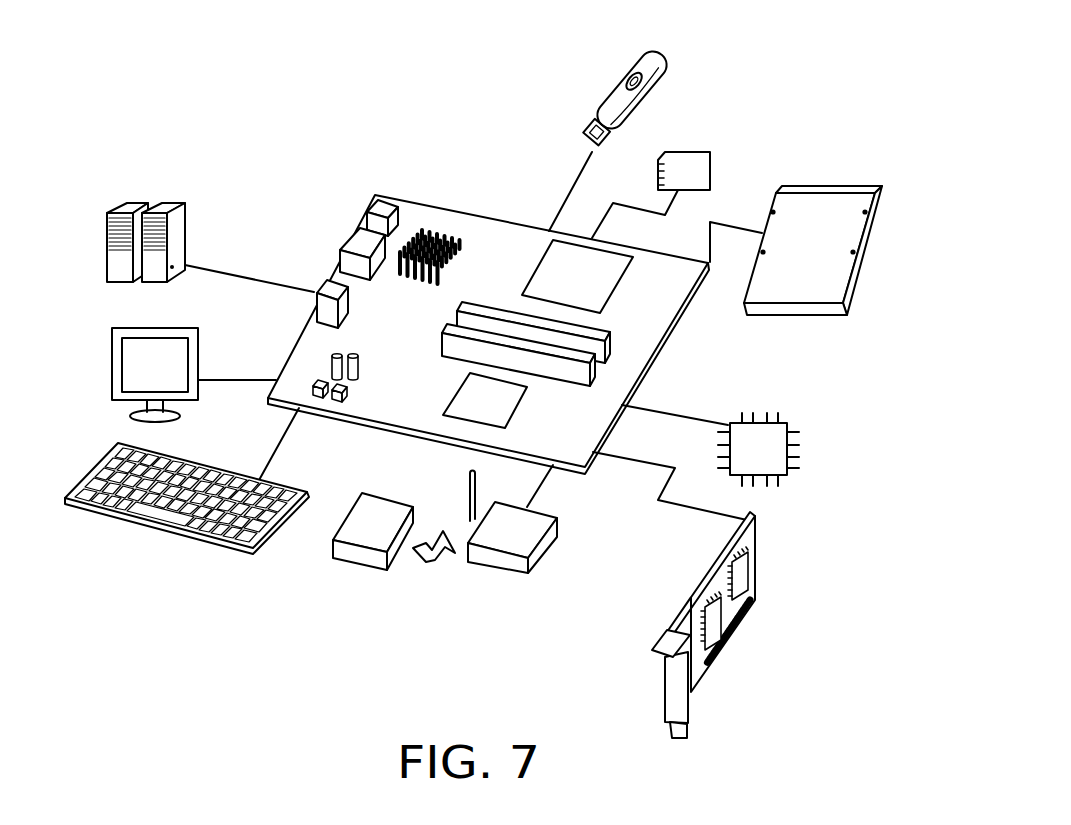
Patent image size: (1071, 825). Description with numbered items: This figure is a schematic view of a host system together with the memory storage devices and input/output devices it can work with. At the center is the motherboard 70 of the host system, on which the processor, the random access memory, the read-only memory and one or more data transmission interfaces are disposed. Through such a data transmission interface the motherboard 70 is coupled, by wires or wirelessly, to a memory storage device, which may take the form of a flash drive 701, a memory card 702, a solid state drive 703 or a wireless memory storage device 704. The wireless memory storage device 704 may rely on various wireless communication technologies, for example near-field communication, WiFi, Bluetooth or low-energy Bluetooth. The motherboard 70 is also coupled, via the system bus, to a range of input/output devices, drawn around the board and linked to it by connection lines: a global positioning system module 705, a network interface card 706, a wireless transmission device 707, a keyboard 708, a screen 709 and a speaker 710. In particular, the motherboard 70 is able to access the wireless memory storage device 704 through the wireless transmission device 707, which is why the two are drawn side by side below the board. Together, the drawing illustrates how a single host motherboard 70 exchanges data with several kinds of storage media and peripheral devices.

The motherboard 70 is at (490, 237).
The flash drive 701 is at (612, 91).
The memory card 702 is at (711, 161).
The solid state drive (SSD) 703 is at (832, 183).
The wireless memory storage device 704 is at (345, 507).
The global positioning system (GPS) module 705 is at (790, 450).
The network interface card 706 is at (757, 572).
The wireless transmission device 707 is at (553, 552).
The keyboard 708 is at (190, 535).
The screen 709 is at (111, 382).
The speaker 710 is at (108, 267).